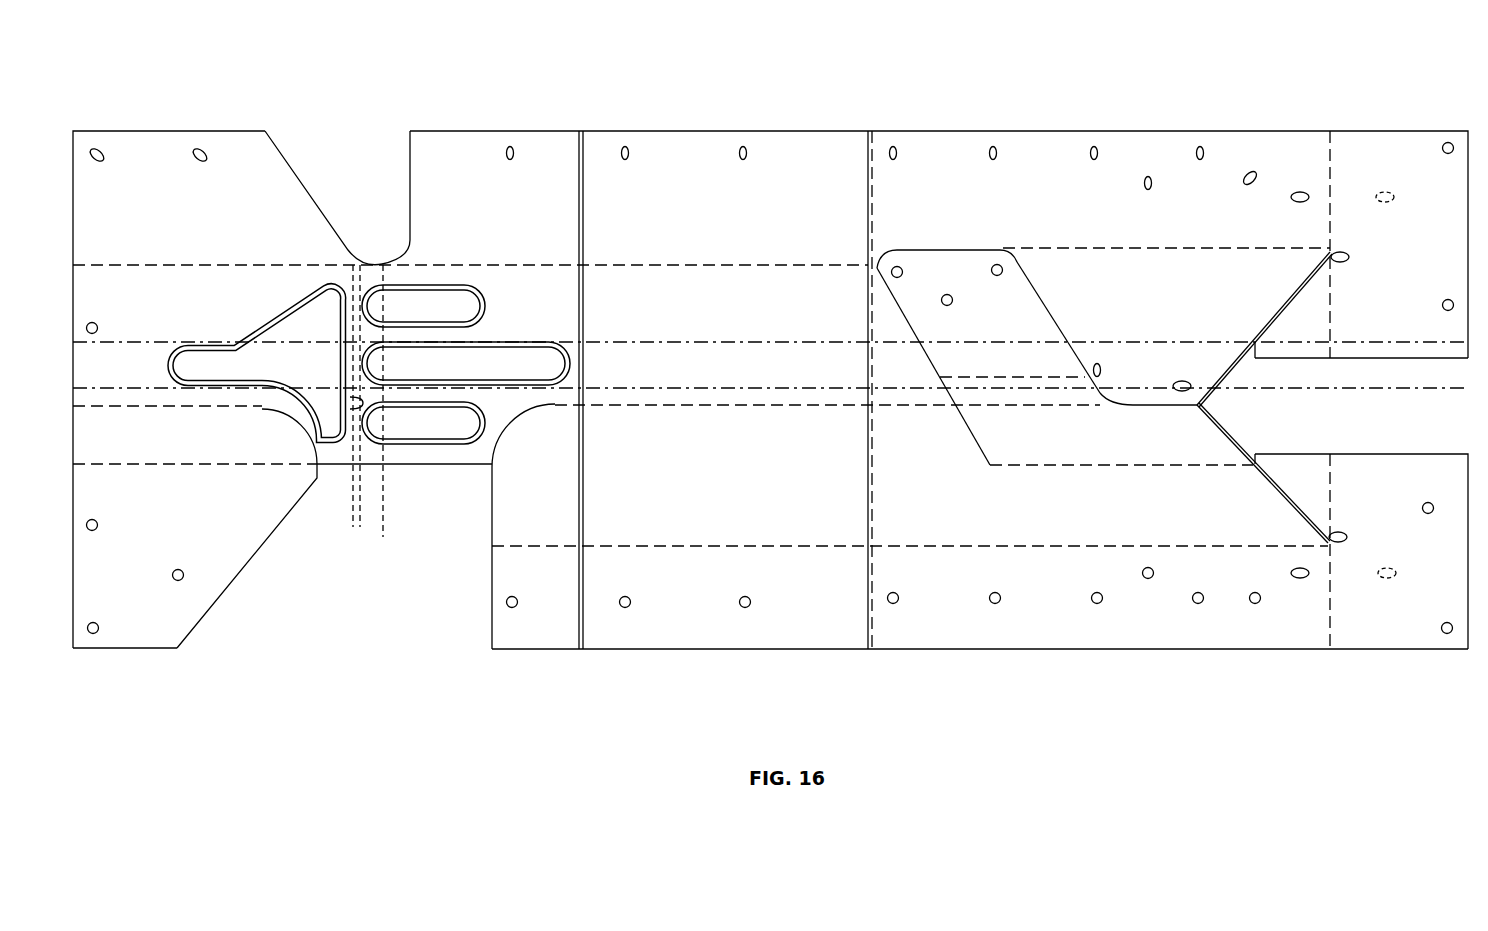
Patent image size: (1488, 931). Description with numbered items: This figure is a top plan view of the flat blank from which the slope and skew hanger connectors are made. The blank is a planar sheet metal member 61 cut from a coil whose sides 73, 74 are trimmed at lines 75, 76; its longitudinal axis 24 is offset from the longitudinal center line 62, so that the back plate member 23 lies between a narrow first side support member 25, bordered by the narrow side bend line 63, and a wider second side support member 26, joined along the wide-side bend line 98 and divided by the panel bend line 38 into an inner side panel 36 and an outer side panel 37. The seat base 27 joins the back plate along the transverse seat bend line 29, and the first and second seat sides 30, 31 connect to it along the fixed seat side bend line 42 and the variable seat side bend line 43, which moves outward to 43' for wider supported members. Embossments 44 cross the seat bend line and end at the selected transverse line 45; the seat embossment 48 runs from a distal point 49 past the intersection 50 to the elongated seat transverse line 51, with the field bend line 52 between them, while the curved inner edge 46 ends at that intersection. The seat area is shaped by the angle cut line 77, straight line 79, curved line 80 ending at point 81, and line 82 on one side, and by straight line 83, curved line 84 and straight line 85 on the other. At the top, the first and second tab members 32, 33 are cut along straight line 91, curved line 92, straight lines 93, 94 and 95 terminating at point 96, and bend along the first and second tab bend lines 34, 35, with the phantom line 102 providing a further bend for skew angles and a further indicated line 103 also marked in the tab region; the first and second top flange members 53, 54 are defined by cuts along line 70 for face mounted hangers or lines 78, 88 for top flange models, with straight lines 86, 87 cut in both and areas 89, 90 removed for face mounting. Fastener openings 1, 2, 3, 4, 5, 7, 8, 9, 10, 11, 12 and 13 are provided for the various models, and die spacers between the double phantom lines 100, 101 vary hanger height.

The fastener openings 1 is at (105, 152).
The fastener openings 2 is at (1448, 299).
The fastener openings 3 is at (514, 151).
The holes 4 is at (1392, 571).
The holes 5 is at (1385, 192).
The fastener openings 7 is at (1447, 622).
The fastener openings 8 is at (1448, 154).
The holes 9 is at (1204, 152).
The fastener openings 10 is at (1198, 592).
The fastener openings 11 is at (1256, 172).
The fastener openings 12 is at (1300, 192).
The holes 13 is at (1350, 257).
The back plate member 23 is at (613, 390).
The longitudinal axis 24 is at (1350, 386).
The first side support member 25 is at (668, 128).
The second side support member 26 is at (632, 652).
The seat base 27 is at (252, 305).
The seat bend line 29 is at (384, 522).
The first seat side 30 is at (156, 130).
The second seat side 31 is at (146, 652).
The first tab member 32 is at (1162, 410).
The second tab member 33 is at (939, 248).
The first tab bend line 34 is at (1097, 247).
The second tab bend line 35 is at (1073, 466).
The inner side panel 36 is at (489, 510).
The outer side panel 37 is at (489, 598).
The panel bend line 38 is at (945, 546).
The first fixed seat side bend line 42 is at (175, 263).
The second variable seat side bend line 43 is at (770, 390).
The second variable seat side bend line 43' is at (195, 435).
The fixed seat bend line embossments 44 is at (500, 360).
The selected transverse line 45 is at (357, 530).
The inner edge 46 is at (296, 418).
The seat embossment 48 is at (196, 358).
The distal point 49 is at (165, 365).
The intersection 50 is at (258, 408).
The elongated seat transverse line 51 is at (350, 405).
The field bend line 52 is at (350, 515).
The first top flange member 53 is at (1427, 127).
The second top flange member 54 is at (1396, 652).
The planar sheet metal member 61 is at (1133, 127).
The longitudinal center line 62 is at (1376, 394).
The narrow side bend line 63 is at (718, 264).
The cut line 70 is at (1335, 296).
The side 73 is at (762, 130).
The side 74 is at (762, 650).
The cut line 75 is at (73, 640).
The cut line 76 is at (1468, 632).
The angle cut line 77 is at (222, 588).
The cut line 78 is at (1425, 359).
The straight line 79 is at (489, 560).
The curved line 80 is at (511, 428).
The point 81 is at (553, 408).
The cut line 82 is at (400, 468).
The straight line 83 is at (315, 195).
The curved line 84 is at (396, 258).
The straight line 85 is at (409, 186).
The straight line 86 is at (1225, 382).
The straight line 87 is at (1235, 445).
The cut line 88 is at (1432, 452).
The area 89 is at (1292, 244).
The area 90 is at (1292, 551).
The straight line 91 is at (1141, 404).
The curved line 92 is at (1106, 395).
The straight line 93 is at (1045, 303).
The straight line 94 is at (978, 249).
The straight line 95 is at (922, 345).
The point 96 is at (988, 466).
The wide-side bend line 98 is at (745, 407).
The double phantom line 100 is at (578, 237).
The double phantom line 101 is at (874, 240).
The phantom line 102 is at (970, 408).
The fold line 103 is at (1015, 378).